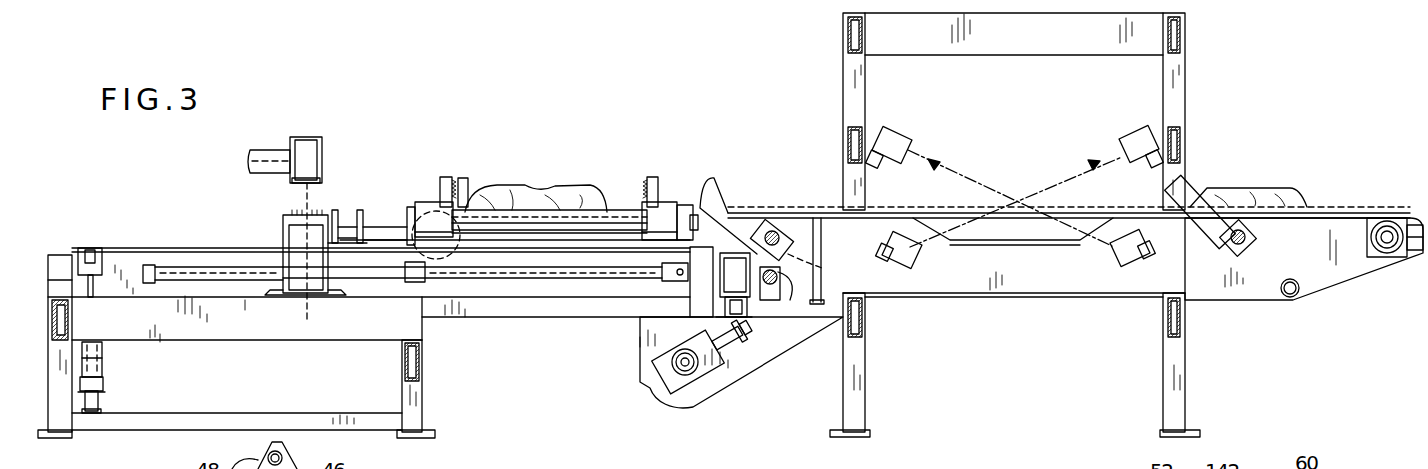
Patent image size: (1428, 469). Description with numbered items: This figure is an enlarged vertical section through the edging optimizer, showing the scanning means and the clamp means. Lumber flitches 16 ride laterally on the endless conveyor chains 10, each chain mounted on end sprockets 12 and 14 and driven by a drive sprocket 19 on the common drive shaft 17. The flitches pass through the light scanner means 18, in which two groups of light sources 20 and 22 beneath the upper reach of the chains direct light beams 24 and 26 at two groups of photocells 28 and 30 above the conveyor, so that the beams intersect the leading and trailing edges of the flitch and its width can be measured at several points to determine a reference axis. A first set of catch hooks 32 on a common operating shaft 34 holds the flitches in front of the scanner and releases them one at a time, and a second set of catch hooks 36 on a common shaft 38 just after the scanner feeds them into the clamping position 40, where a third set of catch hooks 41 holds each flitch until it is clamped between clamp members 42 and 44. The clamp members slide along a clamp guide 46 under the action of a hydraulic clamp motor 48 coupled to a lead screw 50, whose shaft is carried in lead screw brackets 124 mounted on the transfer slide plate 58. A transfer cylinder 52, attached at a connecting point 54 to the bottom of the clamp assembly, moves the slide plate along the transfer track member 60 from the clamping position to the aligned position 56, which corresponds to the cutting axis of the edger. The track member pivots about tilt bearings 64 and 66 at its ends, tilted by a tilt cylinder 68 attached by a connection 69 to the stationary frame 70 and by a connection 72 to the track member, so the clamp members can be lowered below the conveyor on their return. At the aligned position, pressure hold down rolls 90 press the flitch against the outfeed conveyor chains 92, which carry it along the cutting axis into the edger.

The conveyor chains 10 is at (815, 210).
The end sprocket 12 is at (1392, 232).
The end sprocket 14 is at (436, 230).
The lumber flitch 16 is at (607, 187).
The common drive shaft 17 is at (785, 278).
The light scanner means 18 is at (1030, 133).
The drive sprockets 19 is at (823, 268).
The light sources 20 is at (1112, 246).
The light sources 22 is at (914, 246).
The light beams 24 is at (990, 187).
The light beams 26 is at (1045, 184).
The photocells 28 is at (900, 137).
The photocells 30 is at (1137, 135).
The first set of catch hooks 32 is at (1197, 223).
The common operating shaft 34 is at (1247, 238).
The second set of catch hooks 36 is at (716, 178).
The common shaft 38 is at (789, 236).
The clamping position 40 is at (567, 169).
The third set of catch hooks 41 is at (466, 182).
The clamp member 42 is at (446, 177).
The clamp member 44 is at (655, 177).
The clamp guide 46 is at (582, 213).
The hydraulic clamp motor 48 is at (348, 212).
The lead screw 50 is at (530, 210).
The transfer cylinder 52 is at (215, 265).
The connecting point 54 is at (680, 276).
The aligned position 56 is at (308, 197).
The transfer slide plate 58 is at (588, 248).
The transfer track member 60 is at (181, 252).
The tilt bearing 64 is at (52, 263).
The tilt bearing 66 is at (730, 272).
The tilt cylinder 68 is at (102, 352).
The connection 69 is at (103, 394).
The stationary frame 70 is at (72, 318).
The connection 72 is at (104, 250).
The pressure hold down rolls 90 is at (307, 137).
The outfeed conveyor chains 92 is at (290, 213).
The lead screw brackets 124 is at (410, 212).